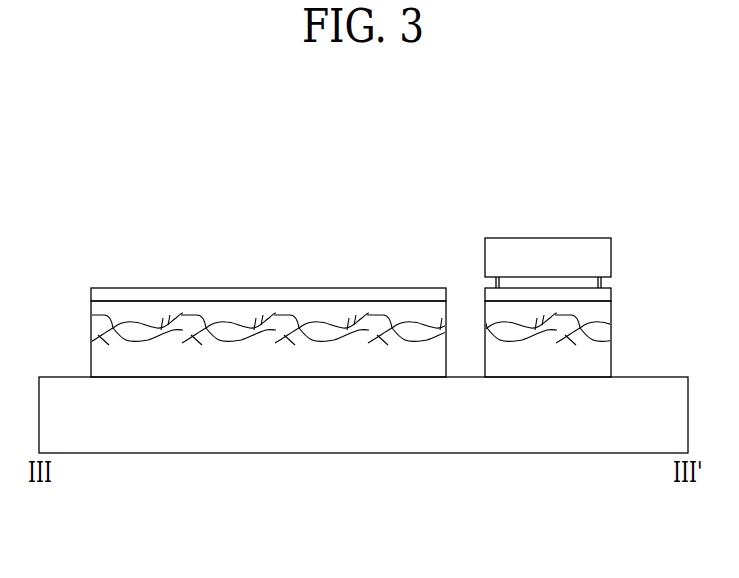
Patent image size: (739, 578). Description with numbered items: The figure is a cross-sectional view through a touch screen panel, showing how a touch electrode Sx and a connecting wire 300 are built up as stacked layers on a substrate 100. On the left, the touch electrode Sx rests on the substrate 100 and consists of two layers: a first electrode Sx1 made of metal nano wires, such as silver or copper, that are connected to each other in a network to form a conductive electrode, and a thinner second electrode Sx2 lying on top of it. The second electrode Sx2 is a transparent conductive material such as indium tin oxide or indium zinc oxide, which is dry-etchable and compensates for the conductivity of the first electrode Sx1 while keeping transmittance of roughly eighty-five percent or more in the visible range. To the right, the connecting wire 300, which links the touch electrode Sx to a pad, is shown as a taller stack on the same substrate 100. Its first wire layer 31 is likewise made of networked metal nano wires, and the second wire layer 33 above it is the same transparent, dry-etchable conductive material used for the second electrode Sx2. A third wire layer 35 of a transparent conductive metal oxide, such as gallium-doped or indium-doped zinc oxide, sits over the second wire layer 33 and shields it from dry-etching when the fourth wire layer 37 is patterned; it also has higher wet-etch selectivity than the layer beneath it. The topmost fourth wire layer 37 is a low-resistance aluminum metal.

The substrate 100 is at (402, 432).
The touch electrode Sx is at (275, 421).
The first electrode Sx1 is at (263, 358).
The second electrode Sx2 is at (317, 293).
The connecting wire 300 is at (556, 399).
The first wire layer 31 is at (512, 358).
The second wire layer 33 is at (531, 295).
The third wire layer 35 is at (557, 281).
The fourth wire layer 37 is at (577, 260).